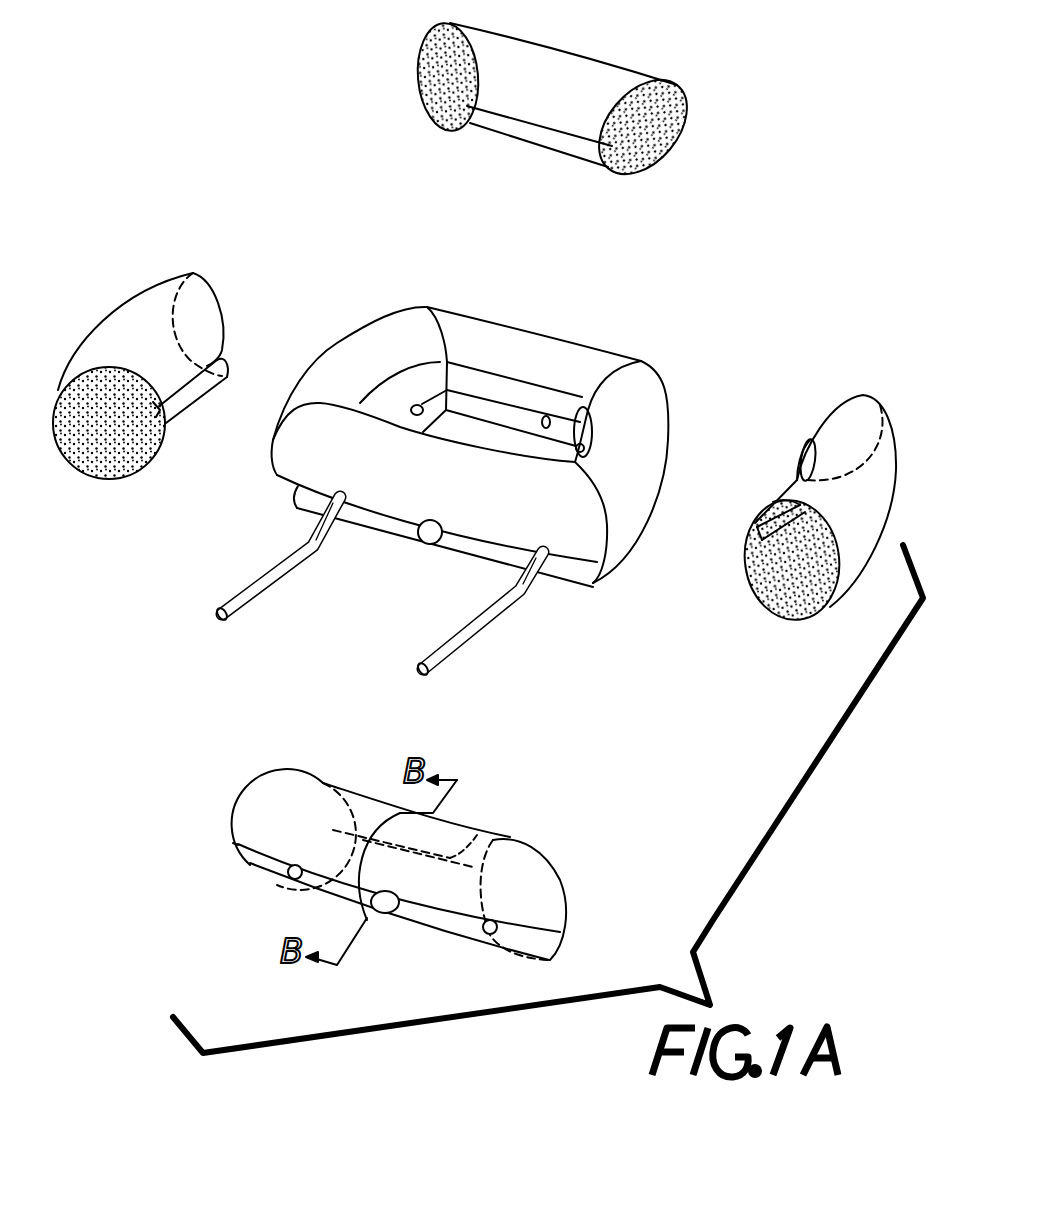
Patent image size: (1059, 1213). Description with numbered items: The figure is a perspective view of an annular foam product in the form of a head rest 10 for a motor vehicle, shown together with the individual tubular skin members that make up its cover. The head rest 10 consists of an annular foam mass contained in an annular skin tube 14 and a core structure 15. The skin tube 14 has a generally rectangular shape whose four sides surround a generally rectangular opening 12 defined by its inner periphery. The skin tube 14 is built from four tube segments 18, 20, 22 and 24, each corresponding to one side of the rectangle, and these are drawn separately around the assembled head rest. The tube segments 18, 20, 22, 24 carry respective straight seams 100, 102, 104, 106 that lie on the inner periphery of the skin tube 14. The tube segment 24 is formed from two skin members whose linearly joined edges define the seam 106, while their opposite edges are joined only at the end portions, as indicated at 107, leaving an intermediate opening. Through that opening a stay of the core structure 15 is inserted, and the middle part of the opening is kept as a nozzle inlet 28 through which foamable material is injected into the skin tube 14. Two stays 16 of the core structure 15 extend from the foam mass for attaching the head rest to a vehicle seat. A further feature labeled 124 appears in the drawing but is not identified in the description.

The head rest 10 is at (602, 283).
The generally rectangular opening 12 is at (493, 437).
The annular skin tube 14 is at (362, 322).
The core structure 15 is at (543, 602).
The stays 16 is at (257, 604).
The tube segment 18 is at (583, 72).
The tube segment 20 is at (130, 298).
The tube segment 22 is at (870, 523).
The tube segment 24 is at (460, 933).
The nozzle inlet 28 is at (428, 538).
The straight seam 100 is at (549, 416).
The straight seam 102 is at (407, 404).
The straight seam 104 is at (584, 449).
The straight seam 106 is at (490, 825).
The partially joined end portions 107 is at (243, 862).
The corner notch 124 is at (297, 508).